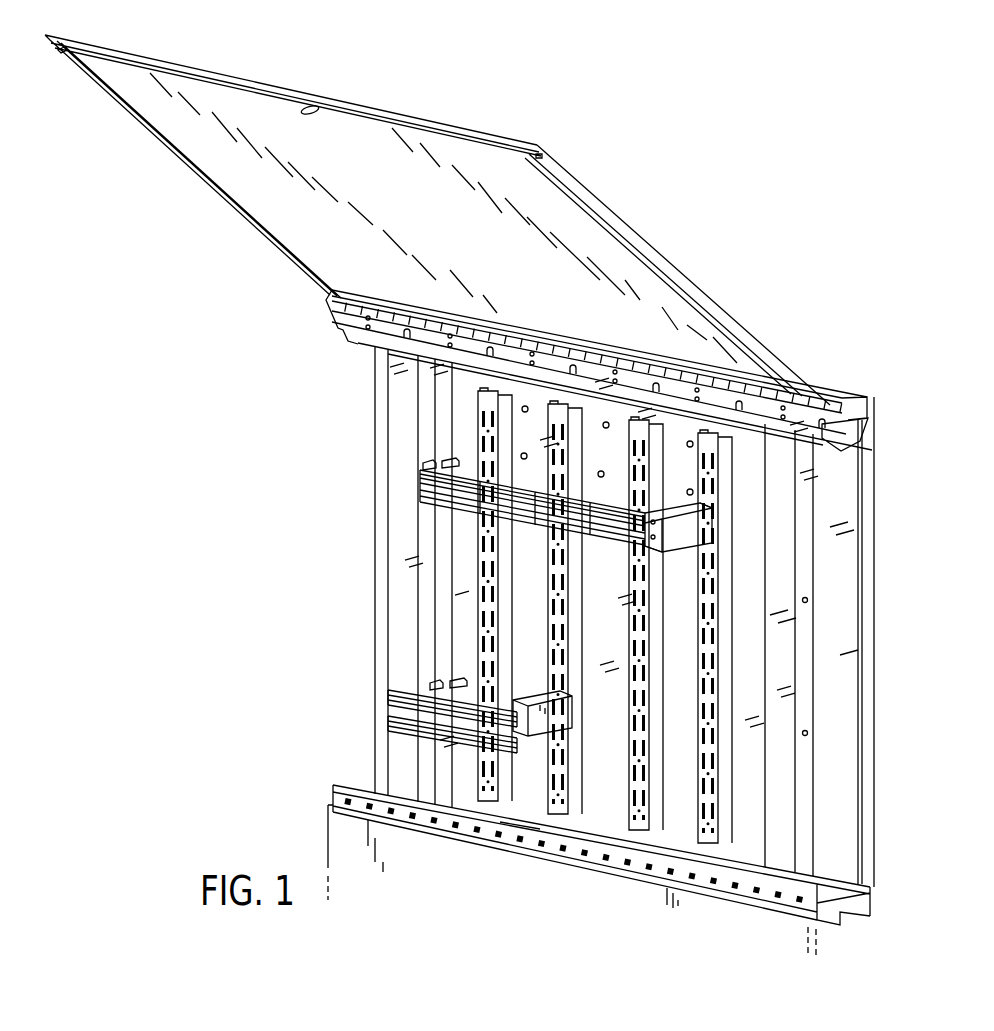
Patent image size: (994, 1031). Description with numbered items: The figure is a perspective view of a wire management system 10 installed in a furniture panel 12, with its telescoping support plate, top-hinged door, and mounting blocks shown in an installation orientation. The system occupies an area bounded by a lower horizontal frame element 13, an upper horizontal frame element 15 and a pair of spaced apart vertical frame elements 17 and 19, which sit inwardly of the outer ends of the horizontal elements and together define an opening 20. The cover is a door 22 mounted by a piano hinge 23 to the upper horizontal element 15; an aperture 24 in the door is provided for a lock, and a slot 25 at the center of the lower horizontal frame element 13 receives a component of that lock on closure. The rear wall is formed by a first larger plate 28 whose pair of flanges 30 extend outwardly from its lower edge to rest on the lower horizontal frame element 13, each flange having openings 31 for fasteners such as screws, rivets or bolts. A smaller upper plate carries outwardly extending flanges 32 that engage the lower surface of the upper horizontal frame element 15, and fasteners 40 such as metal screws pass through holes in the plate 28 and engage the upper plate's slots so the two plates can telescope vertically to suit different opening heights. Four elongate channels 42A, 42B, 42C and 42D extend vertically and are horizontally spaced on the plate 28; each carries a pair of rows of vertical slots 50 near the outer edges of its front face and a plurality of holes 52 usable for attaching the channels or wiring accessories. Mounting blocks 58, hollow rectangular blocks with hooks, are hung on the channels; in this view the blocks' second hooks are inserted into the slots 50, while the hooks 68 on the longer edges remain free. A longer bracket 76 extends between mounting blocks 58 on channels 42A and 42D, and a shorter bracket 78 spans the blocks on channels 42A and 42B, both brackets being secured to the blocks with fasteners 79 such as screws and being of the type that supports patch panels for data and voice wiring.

The wire management system 10 is at (273, 557).
The furniture panel 12 is at (322, 833).
The lower horizontal frame element 13 is at (352, 781).
The upper horizontal frame element 15 is at (358, 340).
The vertical frame element 17 is at (391, 540).
The vertical frame element 19 is at (770, 620).
The opening 20 is at (447, 402).
The door 22 is at (420, 227).
The piano hinge 23 is at (633, 384).
The aperture 24 is at (318, 112).
The slot 25 is at (567, 843).
The first larger plate 28 is at (595, 649).
The flanges 30 is at (517, 818).
The openings 31 is at (657, 853).
The flanges 32 is at (512, 380).
The fasteners 40 is at (527, 412).
The elongate channel 42A is at (506, 631).
The elongate channel 42B is at (567, 647).
The elongate channel 42C is at (643, 660).
The elongate channel 42D is at (710, 840).
The slots 50 is at (516, 601).
The holes 52 is at (588, 624).
The mounting block 58 is at (707, 527).
The hooks 68 is at (445, 447).
The bracket 76 is at (545, 517).
The bracket 78 is at (448, 716).
The fasteners 79 is at (652, 552).